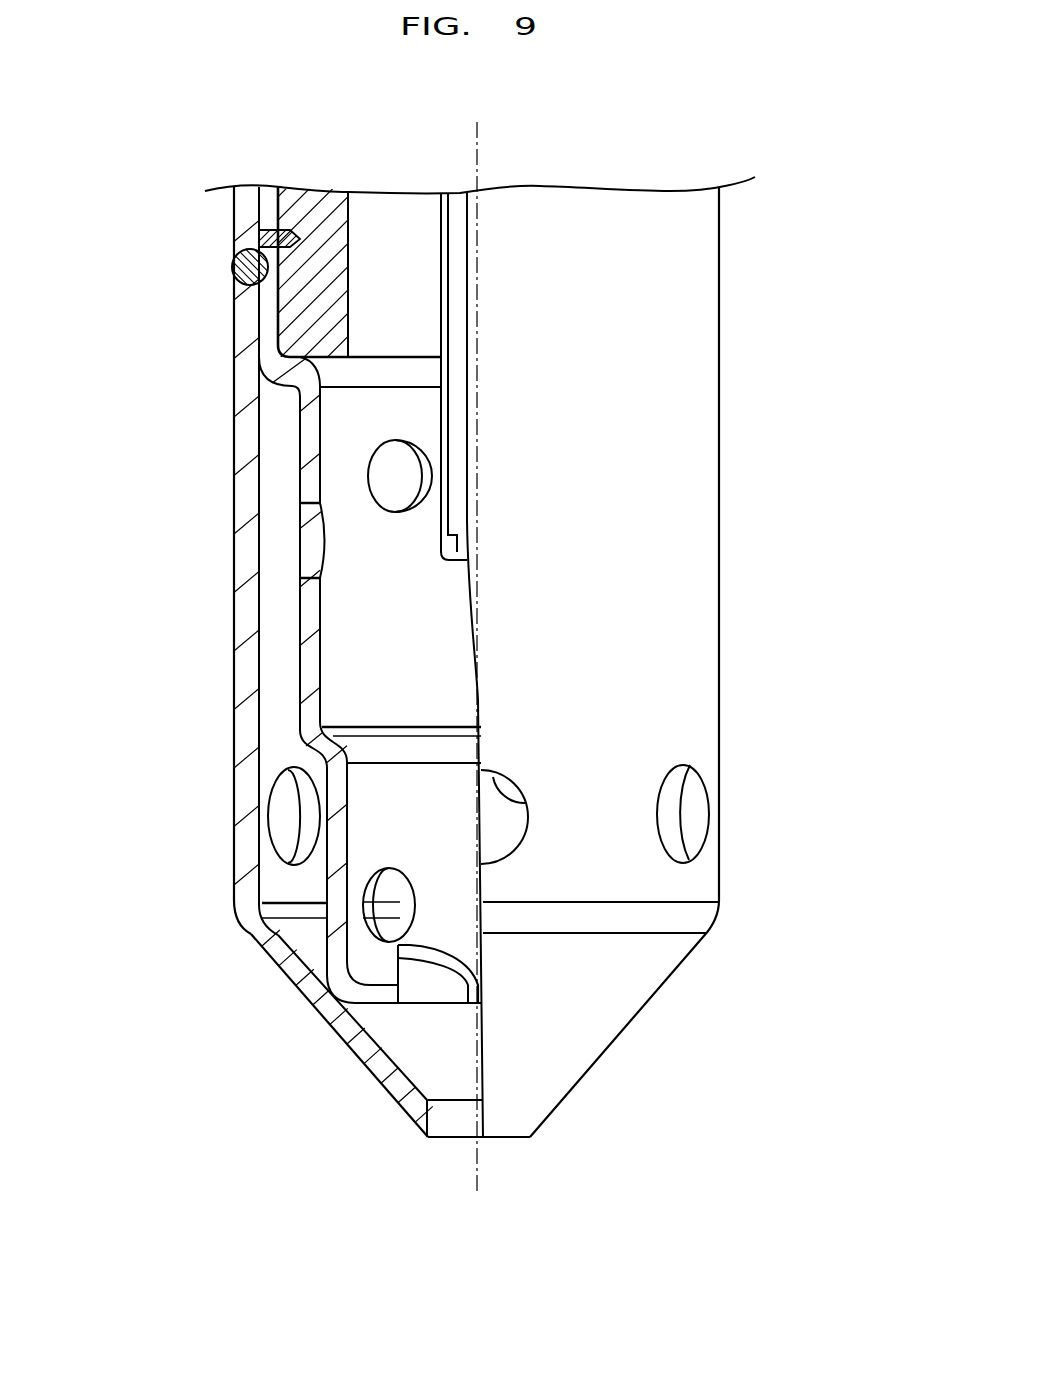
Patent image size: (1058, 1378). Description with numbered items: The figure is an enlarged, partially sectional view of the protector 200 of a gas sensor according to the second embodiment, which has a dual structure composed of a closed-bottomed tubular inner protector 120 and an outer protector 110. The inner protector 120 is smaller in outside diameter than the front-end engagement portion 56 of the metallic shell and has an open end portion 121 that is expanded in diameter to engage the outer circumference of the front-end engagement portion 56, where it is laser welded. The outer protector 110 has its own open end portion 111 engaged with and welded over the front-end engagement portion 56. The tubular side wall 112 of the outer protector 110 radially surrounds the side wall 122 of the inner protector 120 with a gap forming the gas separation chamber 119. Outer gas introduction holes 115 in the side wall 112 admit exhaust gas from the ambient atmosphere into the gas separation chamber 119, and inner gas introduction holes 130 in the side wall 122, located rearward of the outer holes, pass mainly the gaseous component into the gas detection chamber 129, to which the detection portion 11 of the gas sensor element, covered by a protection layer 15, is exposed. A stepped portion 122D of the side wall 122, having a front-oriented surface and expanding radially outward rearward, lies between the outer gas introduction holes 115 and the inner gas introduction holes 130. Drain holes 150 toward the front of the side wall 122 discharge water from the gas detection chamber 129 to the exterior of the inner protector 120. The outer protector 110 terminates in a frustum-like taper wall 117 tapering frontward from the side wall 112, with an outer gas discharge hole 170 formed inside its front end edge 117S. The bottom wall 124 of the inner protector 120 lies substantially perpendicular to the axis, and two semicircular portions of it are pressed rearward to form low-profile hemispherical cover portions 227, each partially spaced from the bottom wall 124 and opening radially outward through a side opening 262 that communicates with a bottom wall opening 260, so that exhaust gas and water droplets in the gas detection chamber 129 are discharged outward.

The protector 200 is at (790, 142).
The outer protector 110 is at (695, 465).
The open end portion 111 is at (235, 331).
The side wall 112 is at (235, 714).
The taper wall 117 is at (313, 1000).
The front end edge 117S is at (416, 1160).
The outer gas discharge hole 170 is at (447, 1120).
The front-end engagement portion 56 is at (335, 223).
The open end portion 121 is at (287, 285).
The protection layer 15 is at (286, 379).
The gas separation chamber 119 is at (276, 478).
The side wall 122 is at (300, 652).
The stepped portion 122D is at (318, 737).
The inner gas introduction holes 130 is at (368, 474).
The detection portion 11 is at (452, 535).
The gas detection chamber 129 is at (428, 630).
The inner protector 120 is at (332, 711).
The bottom wall 124 is at (357, 997).
The bottom wall openings 260 is at (413, 1003).
The side opening 262 is at (398, 967).
The cover portion 227 is at (447, 947).
The drain holes 150 is at (347, 935).
The outer gas introduction holes 115 is at (283, 820).